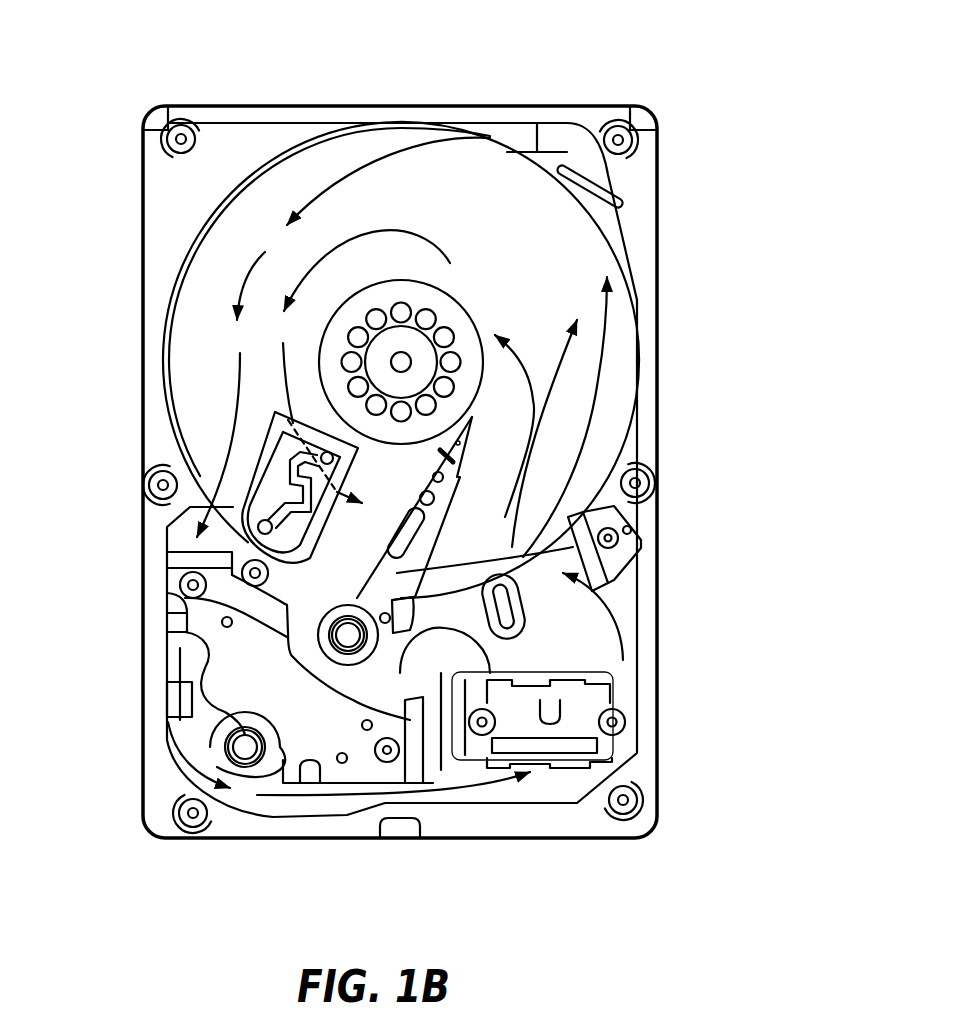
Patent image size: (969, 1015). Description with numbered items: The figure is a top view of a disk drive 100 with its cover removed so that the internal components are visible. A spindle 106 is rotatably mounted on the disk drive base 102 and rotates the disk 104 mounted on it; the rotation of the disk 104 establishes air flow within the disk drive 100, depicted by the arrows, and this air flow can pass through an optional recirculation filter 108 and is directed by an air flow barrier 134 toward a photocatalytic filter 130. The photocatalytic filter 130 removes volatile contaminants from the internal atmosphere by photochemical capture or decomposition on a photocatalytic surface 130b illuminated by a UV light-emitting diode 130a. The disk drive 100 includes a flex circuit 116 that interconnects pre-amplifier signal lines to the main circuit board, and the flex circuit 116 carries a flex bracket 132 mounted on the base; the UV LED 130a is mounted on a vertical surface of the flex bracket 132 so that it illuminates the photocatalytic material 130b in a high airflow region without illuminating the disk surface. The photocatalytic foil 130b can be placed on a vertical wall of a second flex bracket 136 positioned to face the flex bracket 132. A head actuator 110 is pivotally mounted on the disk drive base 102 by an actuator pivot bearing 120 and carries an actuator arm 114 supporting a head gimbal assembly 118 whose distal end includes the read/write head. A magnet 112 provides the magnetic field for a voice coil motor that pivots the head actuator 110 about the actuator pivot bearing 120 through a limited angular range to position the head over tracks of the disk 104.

The disk drive 100 is at (727, 91).
The disk drive base 102 is at (655, 320).
The disk 104 is at (533, 212).
The spindle 106 is at (401, 360).
The recirculation filter 108 is at (600, 190).
The head actuator 110 is at (427, 527).
The magnet 112 is at (255, 693).
The actuator arm 114 is at (641, 560).
The flex circuit 116 is at (388, 753).
The head gimbal assembly 118 is at (462, 444).
The actuator pivot bearing 120 is at (348, 635).
The photocatalytic filter 130 is at (437, 760).
The UV light-emitting diode 130a is at (597, 710).
The photocatalytic surface 130b is at (582, 745).
The flex bracket 132 is at (577, 672).
The air flow barrier 134 is at (250, 484).
The second flex bracket 136 is at (543, 763).